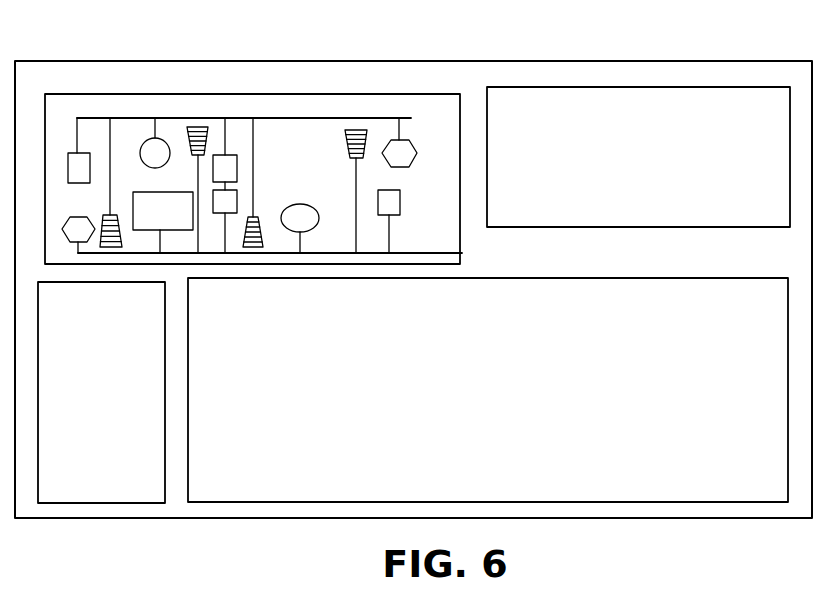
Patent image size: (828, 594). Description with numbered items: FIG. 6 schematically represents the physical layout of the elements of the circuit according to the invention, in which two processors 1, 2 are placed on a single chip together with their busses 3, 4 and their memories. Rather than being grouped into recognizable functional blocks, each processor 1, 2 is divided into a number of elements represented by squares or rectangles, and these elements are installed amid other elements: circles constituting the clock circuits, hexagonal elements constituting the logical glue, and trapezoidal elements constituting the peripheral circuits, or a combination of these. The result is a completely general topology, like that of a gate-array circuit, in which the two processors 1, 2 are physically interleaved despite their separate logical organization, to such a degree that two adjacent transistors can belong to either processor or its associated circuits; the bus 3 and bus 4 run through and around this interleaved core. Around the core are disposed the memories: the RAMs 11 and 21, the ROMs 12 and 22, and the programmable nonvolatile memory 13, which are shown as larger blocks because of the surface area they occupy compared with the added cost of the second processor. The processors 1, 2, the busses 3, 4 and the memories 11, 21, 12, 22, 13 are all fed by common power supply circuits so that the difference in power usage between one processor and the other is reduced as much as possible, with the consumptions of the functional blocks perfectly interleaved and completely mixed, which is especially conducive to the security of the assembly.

The processor 1 is at (400, 148).
The processor 2 is at (83, 237).
The bus 3 is at (189, 118).
The bus 4 is at (422, 252).
The RAM 11 is at (101, 392).
The RAM 21 is at (153, 410).
The ROM 12 is at (638, 157).
The ROM 22 is at (593, 175).
The programmable nonvolatile memory 13 is at (475, 417).